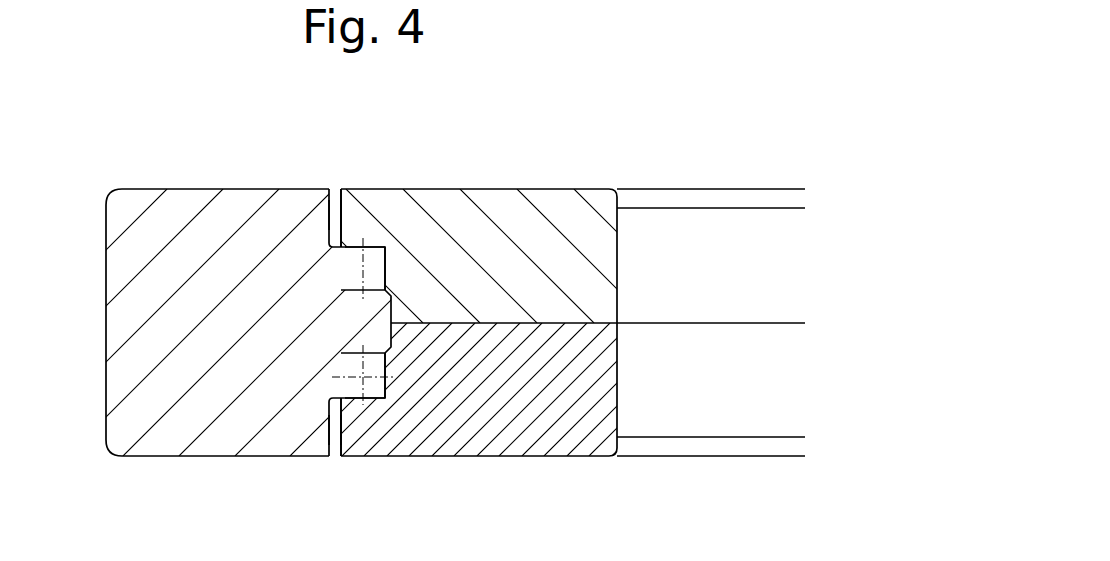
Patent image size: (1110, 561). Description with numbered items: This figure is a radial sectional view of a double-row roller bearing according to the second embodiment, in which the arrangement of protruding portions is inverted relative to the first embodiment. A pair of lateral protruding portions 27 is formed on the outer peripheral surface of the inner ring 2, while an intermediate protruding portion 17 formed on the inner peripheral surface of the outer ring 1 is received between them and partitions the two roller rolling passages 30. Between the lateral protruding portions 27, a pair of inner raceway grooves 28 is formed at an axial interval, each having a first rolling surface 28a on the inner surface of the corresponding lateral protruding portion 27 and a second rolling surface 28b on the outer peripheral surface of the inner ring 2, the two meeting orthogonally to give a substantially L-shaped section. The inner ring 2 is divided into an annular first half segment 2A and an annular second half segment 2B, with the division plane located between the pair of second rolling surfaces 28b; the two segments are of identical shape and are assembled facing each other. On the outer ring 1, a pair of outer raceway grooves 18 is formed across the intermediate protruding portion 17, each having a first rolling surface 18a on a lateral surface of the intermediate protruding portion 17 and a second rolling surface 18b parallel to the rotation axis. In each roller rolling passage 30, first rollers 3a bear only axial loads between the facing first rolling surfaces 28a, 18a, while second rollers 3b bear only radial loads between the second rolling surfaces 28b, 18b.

The outer ring 1 is at (146, 184).
The inner ring 2 is at (587, 184).
The first half segment 2A is at (548, 210).
The second half segment 2B is at (550, 457).
The first rollers 3a is at (380, 282).
The second rollers 3b is at (345, 366).
The intermediate protruding portion 17 is at (392, 318).
The outer raceway grooves 18 is at (318, 146).
The first rolling surface 18a is at (329, 246).
The second rolling surface 18b is at (341, 245).
The lateral protruding portions 27 is at (360, 200).
The inner raceway grooves 28 is at (483, 146).
The first rolling surface 28a is at (370, 247).
The second rolling surface 28b is at (388, 255).
The roller rolling passages 30 is at (338, 343).